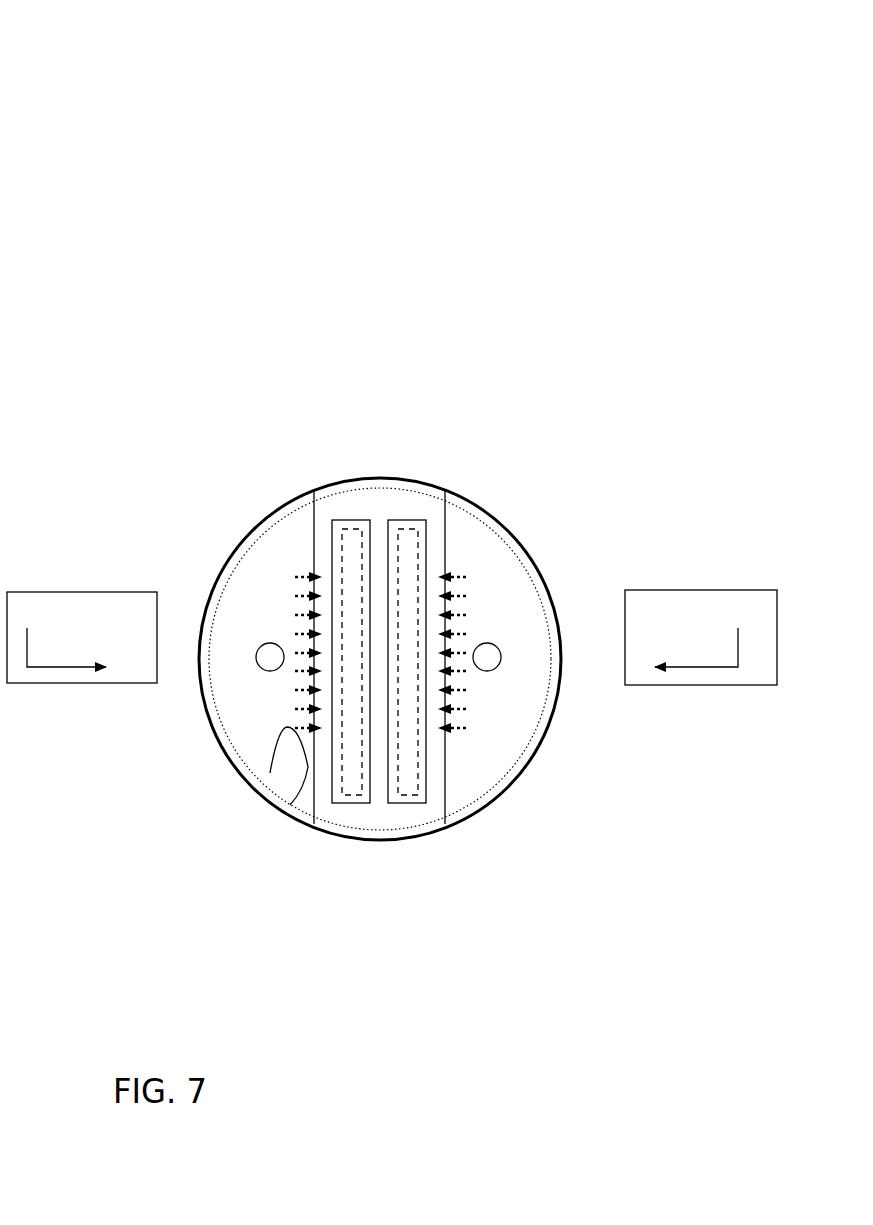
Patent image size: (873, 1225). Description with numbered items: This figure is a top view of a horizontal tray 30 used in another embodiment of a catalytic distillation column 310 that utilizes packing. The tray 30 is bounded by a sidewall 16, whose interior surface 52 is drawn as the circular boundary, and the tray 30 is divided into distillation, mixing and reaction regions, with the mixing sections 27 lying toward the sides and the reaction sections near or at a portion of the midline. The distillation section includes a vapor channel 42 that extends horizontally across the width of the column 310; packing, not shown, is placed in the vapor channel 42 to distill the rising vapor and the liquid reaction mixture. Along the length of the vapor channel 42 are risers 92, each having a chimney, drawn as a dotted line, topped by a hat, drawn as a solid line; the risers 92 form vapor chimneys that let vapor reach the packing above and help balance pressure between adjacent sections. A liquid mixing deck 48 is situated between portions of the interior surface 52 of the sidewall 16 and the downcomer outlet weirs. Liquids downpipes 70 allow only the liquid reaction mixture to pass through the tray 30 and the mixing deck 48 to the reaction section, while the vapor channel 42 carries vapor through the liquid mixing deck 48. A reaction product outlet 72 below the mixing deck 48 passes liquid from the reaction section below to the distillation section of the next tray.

The catalytic distillation column 310 is at (150, 152).
The horizontal tray 30 is at (168, 492).
The sidewall 16 is at (382, 838).
The liquids downpipes 70 is at (270, 645).
The reaction product outlet 72 is at (312, 627).
The risers 92 is at (343, 657).
The vapor channel 42 is at (363, 414).
The mixing sections 27 is at (232, 667).
The liquid mixing deck 48 is at (232, 707).
The interior surface 52 is at (270, 773).